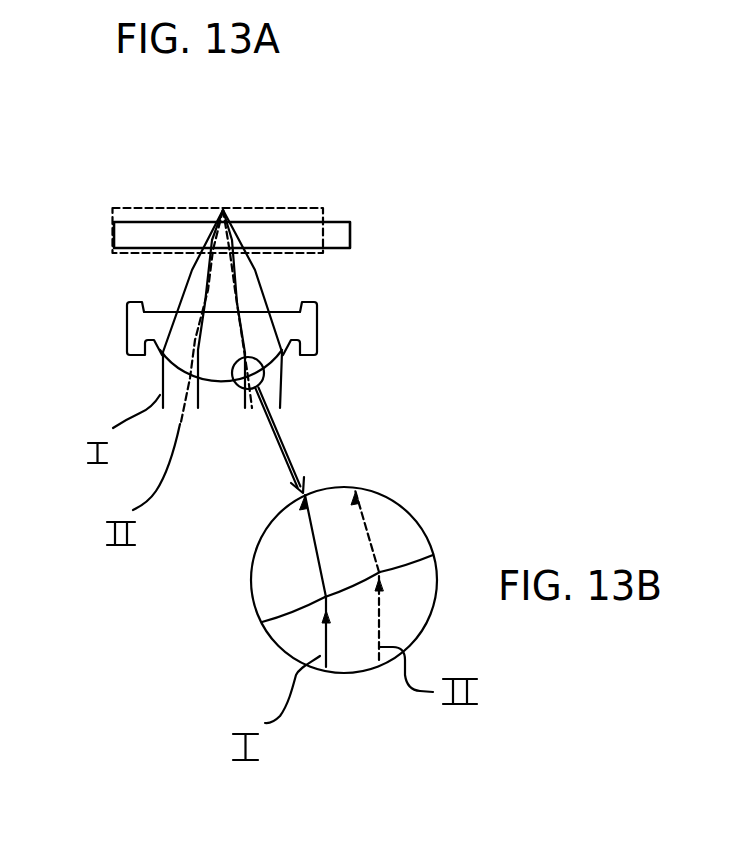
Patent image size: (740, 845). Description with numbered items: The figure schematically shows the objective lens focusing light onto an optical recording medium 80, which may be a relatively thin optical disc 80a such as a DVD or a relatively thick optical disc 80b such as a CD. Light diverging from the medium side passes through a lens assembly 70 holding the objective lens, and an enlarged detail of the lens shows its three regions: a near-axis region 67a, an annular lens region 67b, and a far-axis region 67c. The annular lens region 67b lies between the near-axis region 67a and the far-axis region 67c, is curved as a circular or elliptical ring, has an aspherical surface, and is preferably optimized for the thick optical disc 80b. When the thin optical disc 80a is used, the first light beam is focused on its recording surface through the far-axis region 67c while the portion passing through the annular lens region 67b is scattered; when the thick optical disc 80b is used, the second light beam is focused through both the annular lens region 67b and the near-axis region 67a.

In FIG. 13A, the optical recording medium 80 is at (243, 194).
In FIG. 13A, the thin optical disc 80a is at (350, 247).
In FIG. 13A, the thick optical disc 80b is at (300, 210).
In FIG. 13A, the lens holder with lens 70 is at (312, 376).
In FIG. 13B, the near-axis region 67a is at (302, 583).
In FIG. 13B, the annular lens region 67b is at (362, 547).
In FIG. 13B, the far-axis region 67c is at (423, 554).